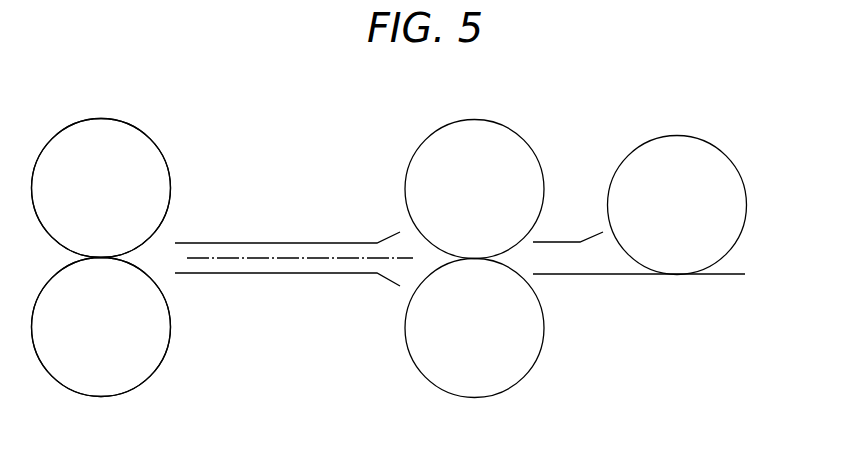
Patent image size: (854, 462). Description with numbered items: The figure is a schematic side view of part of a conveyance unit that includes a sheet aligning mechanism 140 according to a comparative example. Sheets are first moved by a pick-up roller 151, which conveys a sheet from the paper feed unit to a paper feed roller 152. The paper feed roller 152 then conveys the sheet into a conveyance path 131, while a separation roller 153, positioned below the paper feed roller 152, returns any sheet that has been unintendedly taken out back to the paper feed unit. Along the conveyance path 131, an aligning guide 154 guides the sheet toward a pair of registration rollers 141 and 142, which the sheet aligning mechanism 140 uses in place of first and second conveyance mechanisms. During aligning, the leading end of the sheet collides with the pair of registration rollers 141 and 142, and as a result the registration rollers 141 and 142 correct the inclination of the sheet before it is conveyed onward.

The sheet aligning mechanism 140 is at (177, 110).
The registration roller 141 is at (163, 155).
The registration roller 142 is at (170, 353).
The conveyance path 131 is at (313, 257).
The aligning guide 154 is at (295, 277).
The paper feed roller 152 is at (497, 122).
The separation roller 153 is at (517, 383).
The pick-up roller 151 is at (737, 170).